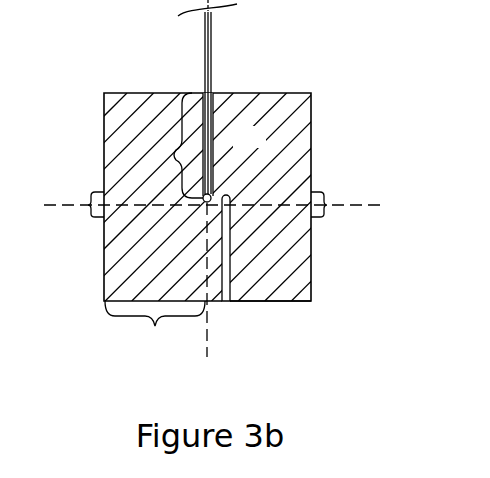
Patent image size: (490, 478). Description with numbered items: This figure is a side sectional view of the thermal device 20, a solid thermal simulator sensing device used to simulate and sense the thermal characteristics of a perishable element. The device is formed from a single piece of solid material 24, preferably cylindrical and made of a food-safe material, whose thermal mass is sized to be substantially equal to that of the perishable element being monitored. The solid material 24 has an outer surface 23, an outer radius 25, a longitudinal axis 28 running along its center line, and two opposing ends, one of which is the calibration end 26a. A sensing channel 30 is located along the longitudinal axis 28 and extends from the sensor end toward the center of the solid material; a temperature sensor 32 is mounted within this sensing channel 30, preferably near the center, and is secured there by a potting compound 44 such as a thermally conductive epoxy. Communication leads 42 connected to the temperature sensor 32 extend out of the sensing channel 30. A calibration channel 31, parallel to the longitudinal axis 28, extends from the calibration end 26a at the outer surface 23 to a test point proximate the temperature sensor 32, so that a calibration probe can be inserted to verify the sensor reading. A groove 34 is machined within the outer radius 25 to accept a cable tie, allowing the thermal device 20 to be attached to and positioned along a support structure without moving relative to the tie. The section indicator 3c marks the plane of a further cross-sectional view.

The sealing assembly 20 is at (326, 247).
The second body portion 23 is at (313, 281).
The body 24 is at (245, 197).
The first body portion 25 is at (155, 332).
The slot 26a is at (293, 301).
The centerline 28 is at (209, 323).
The channel 30 is at (180, 148).
The slot wall 31 is at (231, 268).
The needle tip 32 is at (211, 195).
The engagement tab 34 is at (88, 205).
The needle 42 is at (211, 44).
The needle passage 44 is at (216, 92).
The section line 3C 3c is at (44, 205).